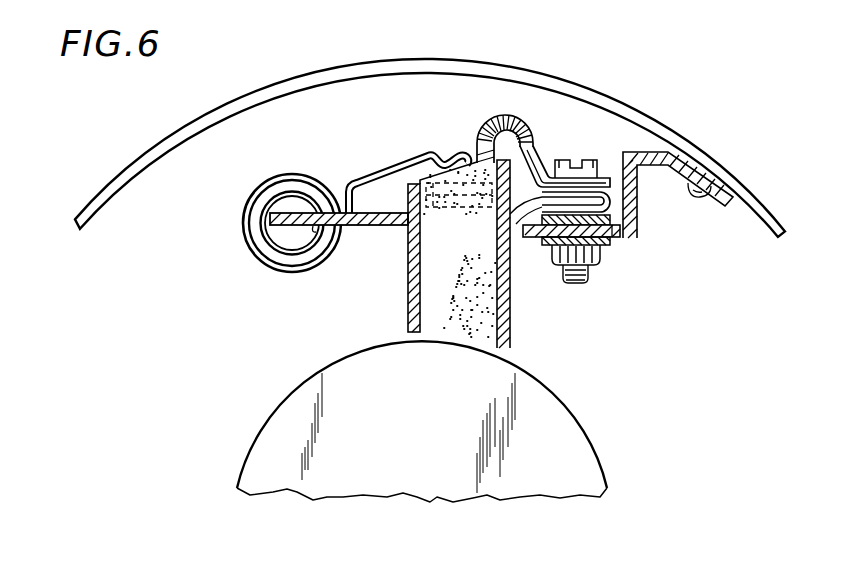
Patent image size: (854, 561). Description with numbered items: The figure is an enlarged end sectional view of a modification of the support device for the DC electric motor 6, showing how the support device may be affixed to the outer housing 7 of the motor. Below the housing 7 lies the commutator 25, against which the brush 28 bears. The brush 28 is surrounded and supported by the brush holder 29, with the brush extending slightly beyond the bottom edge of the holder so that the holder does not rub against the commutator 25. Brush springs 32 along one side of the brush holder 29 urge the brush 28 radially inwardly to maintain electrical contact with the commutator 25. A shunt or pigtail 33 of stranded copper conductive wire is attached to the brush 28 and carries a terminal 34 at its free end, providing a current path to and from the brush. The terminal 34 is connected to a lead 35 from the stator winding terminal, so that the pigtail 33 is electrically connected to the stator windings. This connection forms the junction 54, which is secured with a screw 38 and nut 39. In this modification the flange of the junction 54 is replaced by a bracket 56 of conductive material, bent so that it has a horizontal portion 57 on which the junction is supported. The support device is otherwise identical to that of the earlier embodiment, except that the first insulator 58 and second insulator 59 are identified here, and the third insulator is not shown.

The DC electric motor 6 is at (430, 135).
The outer housing 7 is at (457, 60).
The commutator 25 is at (587, 435).
The brush 28 is at (447, 308).
The brush holder 29 is at (408, 280).
The brush springs 32 is at (290, 191).
The pigtail 33 is at (482, 118).
The terminal 34 is at (540, 172).
The lead 35 is at (500, 229).
The screw 38 is at (572, 284).
The nut 39 is at (592, 160).
The junction 54 is at (607, 247).
The bracket 56 is at (638, 209).
The horizontal portion 57 is at (527, 240).
The first insulator 58 is at (621, 234).
The second insulator 59 is at (613, 248).